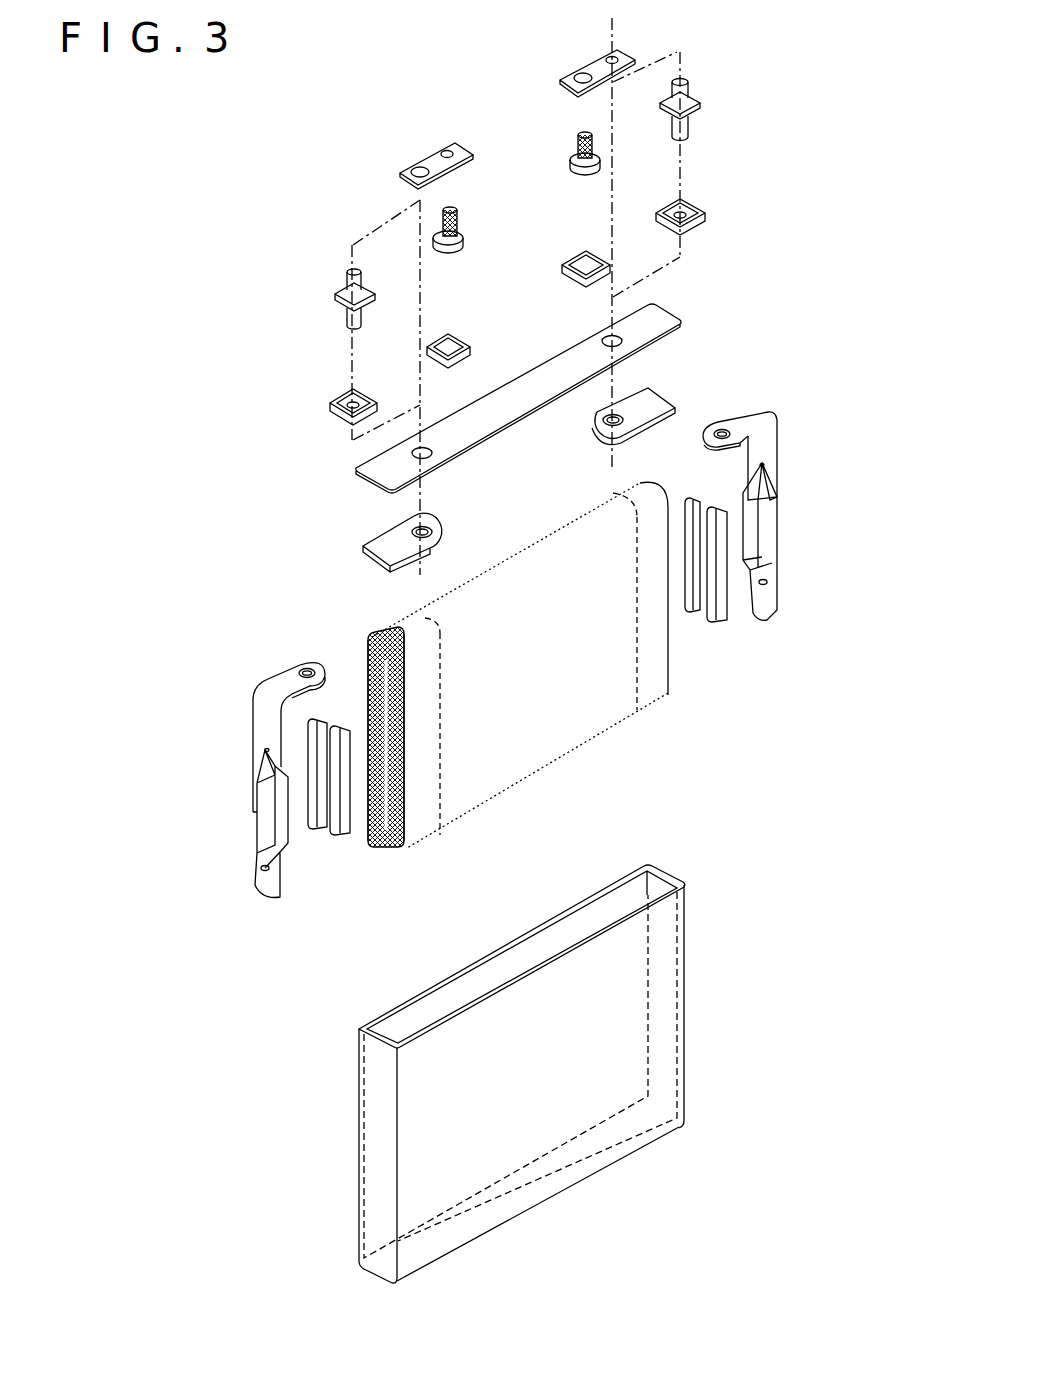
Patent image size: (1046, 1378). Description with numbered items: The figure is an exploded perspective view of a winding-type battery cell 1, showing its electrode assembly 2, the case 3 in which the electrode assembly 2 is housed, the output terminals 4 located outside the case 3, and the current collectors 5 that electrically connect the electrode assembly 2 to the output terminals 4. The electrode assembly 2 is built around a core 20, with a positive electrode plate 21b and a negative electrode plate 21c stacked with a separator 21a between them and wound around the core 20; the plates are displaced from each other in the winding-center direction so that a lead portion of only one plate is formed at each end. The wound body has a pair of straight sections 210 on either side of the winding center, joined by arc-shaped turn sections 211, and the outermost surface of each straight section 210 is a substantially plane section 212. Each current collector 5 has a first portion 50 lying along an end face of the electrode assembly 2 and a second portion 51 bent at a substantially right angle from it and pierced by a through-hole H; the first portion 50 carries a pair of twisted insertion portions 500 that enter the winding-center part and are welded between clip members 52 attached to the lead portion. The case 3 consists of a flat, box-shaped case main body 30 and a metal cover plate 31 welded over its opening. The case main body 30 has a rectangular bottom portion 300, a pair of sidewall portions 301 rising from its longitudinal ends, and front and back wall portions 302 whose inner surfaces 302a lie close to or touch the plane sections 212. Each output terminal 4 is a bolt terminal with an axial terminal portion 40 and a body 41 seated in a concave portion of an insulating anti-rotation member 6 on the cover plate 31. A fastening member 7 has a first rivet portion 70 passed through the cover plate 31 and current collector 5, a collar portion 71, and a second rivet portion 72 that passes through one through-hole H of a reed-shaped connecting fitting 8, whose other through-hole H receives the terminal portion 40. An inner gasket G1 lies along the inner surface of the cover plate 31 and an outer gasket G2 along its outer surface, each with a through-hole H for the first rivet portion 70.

The battery cell 1 is at (805, 243).
The electrode assembly 2 is at (742, 712).
The case 3 is at (564, 773).
The output terminal 4 is at (500, 208).
The current collector 5 is at (806, 334).
The anti-rotation member 6 is at (466, 350).
The fastening member 7 is at (273, 226).
The connecting fitting 8 is at (435, 160).
The core 20 is at (370, 673).
The separator 21a is at (578, 713).
The positive electrode plate 21b is at (653, 672).
The negative electrode plate 21c is at (557, 763).
The case main body 30 is at (711, 964).
The cover plate 31 is at (672, 312).
The terminal portion 40 is at (453, 215).
The body 41 is at (448, 238).
The first portion 50 is at (773, 440).
The second portion 51 is at (742, 420).
The clip member 52 is at (720, 508).
The first rivet portion 70 is at (350, 312).
The collar portion 71 is at (345, 292).
The second rivet portion 72 is at (352, 272).
The straight section 210 is at (367, 742).
The turn section 211 is at (478, 586).
The substantially plane section 212 is at (372, 665).
The bottom portion 300 is at (604, 1141).
The sidewall portion 301 is at (678, 884).
The front and back wall portion 302 is at (400, 1010).
The inner surface 302a is at (474, 994).
The insertion portion 500 is at (765, 533).
The inner gasket G1 is at (388, 536).
The outer gasket G2 is at (334, 406).
The through-hole H is at (412, 170).